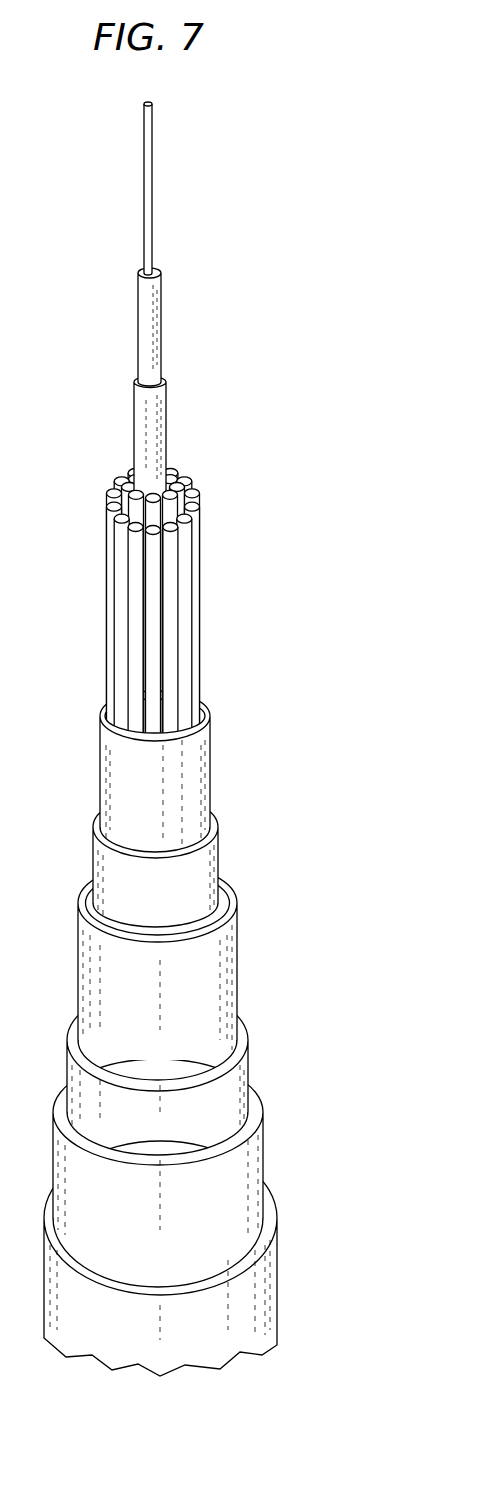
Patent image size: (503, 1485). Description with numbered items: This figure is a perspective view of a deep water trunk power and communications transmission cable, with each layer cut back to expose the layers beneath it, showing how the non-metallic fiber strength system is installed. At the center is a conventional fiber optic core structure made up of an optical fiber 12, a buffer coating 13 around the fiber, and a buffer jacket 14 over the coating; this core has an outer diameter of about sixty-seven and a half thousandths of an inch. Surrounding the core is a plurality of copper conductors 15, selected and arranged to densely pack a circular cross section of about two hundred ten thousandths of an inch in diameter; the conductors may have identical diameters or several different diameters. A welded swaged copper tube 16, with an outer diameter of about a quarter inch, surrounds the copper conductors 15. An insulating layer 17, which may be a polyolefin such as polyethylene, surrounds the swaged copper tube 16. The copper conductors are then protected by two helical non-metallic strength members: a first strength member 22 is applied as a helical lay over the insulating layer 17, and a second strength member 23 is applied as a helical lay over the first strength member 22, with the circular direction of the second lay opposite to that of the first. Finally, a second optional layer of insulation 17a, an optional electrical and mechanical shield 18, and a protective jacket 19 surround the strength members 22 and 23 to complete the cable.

The optical fiber 12 is at (152, 200).
The buffer coating 13 is at (161, 330).
The buffer jacket 14 is at (166, 421).
The copper conductors 15 is at (183, 475).
The welded swaged copper tube 16 is at (210, 752).
The insulating layer 17 is at (217, 820).
The first strength member 22 is at (223, 892).
The second strength member 23 is at (232, 900).
The second optional layer of insulation 17a is at (244, 1032).
The electrical and mechanical shield 18 is at (262, 1097).
The protective jacket 19 is at (270, 1225).